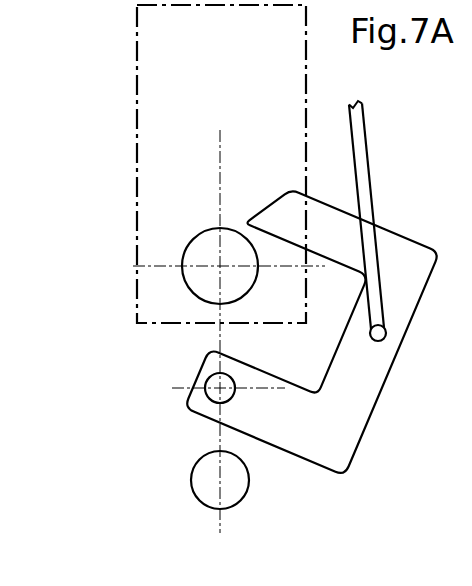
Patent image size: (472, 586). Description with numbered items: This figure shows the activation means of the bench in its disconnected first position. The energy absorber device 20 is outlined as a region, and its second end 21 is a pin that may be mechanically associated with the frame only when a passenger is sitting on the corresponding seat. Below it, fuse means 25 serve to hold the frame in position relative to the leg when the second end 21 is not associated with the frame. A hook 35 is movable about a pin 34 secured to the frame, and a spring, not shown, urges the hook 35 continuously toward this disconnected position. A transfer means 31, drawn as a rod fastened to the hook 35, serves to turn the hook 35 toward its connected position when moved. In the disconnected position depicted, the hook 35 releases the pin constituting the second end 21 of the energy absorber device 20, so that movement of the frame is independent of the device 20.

The energy absorber device 20 is at (112, 98).
The second end 21 is at (205, 246).
The fuse means 25 is at (207, 470).
The transfer means 31 is at (363, 175).
The pin 34 is at (212, 381).
The hook 35 is at (367, 382).